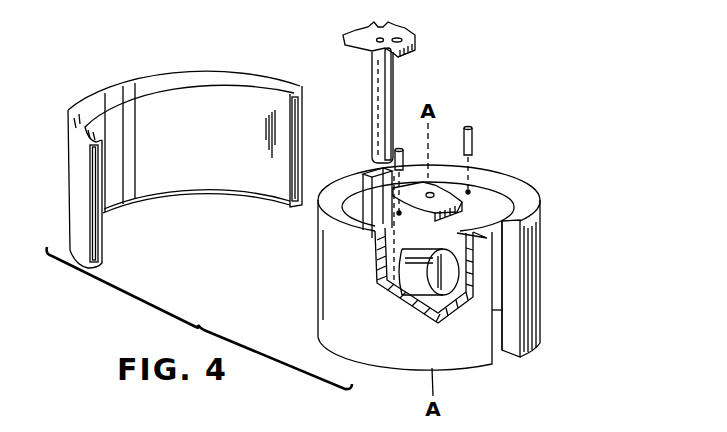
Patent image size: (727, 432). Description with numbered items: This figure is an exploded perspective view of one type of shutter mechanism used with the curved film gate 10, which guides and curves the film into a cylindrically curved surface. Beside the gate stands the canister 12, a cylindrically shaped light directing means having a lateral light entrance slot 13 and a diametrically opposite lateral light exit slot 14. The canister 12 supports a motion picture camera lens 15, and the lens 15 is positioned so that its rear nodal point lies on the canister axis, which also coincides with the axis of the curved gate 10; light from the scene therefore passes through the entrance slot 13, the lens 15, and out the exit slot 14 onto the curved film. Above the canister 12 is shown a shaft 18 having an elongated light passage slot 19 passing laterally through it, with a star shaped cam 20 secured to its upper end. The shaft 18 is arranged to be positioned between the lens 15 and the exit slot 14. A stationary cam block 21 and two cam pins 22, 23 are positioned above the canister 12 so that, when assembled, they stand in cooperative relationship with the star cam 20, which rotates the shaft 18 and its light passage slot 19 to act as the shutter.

The curved film gate 10 is at (219, 73).
The canister 12 is at (503, 183).
The light entrance slot 13 is at (510, 287).
The light exit slot 14 is at (362, 187).
The motion picture camera lens 15 is at (420, 265).
The shaft 18 is at (382, 88).
The elongated light passage slot 19 is at (390, 120).
The star shaped cam 20 is at (398, 28).
The stationary cam block 21 is at (457, 205).
The cam pin 22 is at (403, 156).
The cam pin 23 is at (472, 137).